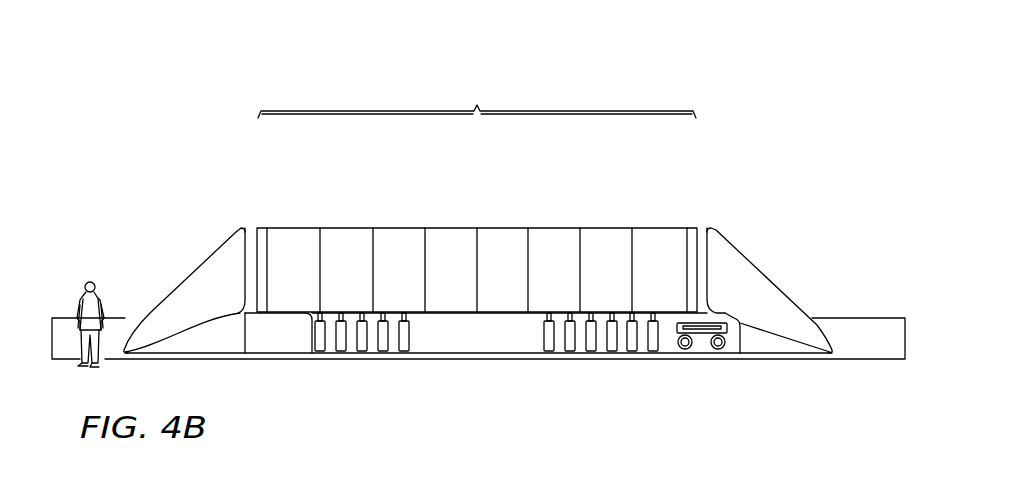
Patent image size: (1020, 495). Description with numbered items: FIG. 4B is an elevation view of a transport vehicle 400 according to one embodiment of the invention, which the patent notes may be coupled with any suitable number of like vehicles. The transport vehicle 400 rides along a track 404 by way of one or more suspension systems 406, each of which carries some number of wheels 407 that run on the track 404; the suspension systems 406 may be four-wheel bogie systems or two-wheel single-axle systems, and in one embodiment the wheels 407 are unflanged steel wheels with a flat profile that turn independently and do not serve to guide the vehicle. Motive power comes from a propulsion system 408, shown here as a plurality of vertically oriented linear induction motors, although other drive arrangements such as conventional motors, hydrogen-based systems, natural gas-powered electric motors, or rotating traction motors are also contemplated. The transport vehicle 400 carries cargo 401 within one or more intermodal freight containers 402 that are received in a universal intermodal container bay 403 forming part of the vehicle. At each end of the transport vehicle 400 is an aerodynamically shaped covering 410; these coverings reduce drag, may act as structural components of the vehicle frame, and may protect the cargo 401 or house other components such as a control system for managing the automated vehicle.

The transport vehicle 400 is at (214, 106).
The cargo 401 is at (477, 125).
The intermodal freight container 402 is at (553, 228).
The universal intermodal container bay 403 is at (455, 308).
The track 404 is at (868, 360).
The suspension system 406 is at (725, 390).
The wheel 407 is at (683, 360).
The propulsion system 408 is at (352, 378).
The aerodynamically shaped covering 410 is at (198, 263).